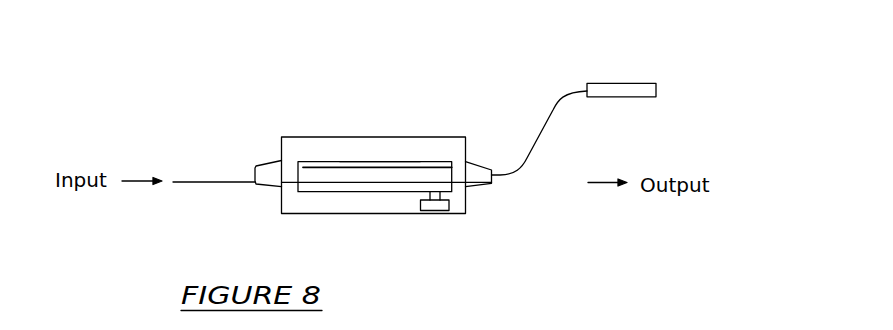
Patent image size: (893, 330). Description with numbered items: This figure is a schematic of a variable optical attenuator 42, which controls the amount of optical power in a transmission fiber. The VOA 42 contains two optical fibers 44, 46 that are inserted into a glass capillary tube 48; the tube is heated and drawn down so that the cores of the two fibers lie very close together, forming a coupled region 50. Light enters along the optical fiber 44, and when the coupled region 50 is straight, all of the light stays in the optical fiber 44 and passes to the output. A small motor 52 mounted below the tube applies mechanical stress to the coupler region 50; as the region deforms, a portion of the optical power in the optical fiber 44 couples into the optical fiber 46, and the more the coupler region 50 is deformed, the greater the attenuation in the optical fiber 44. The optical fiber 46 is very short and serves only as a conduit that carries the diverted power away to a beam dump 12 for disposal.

The light source 12 is at (622, 83).
The variable optical attenuator 42 is at (444, 130).
The optical fiber 44 is at (346, 182).
The optical fiber 46 is at (352, 167).
The glass capillary tube 48 is at (324, 161).
The coupled region 50 is at (365, 162).
The small motor 52 is at (434, 206).